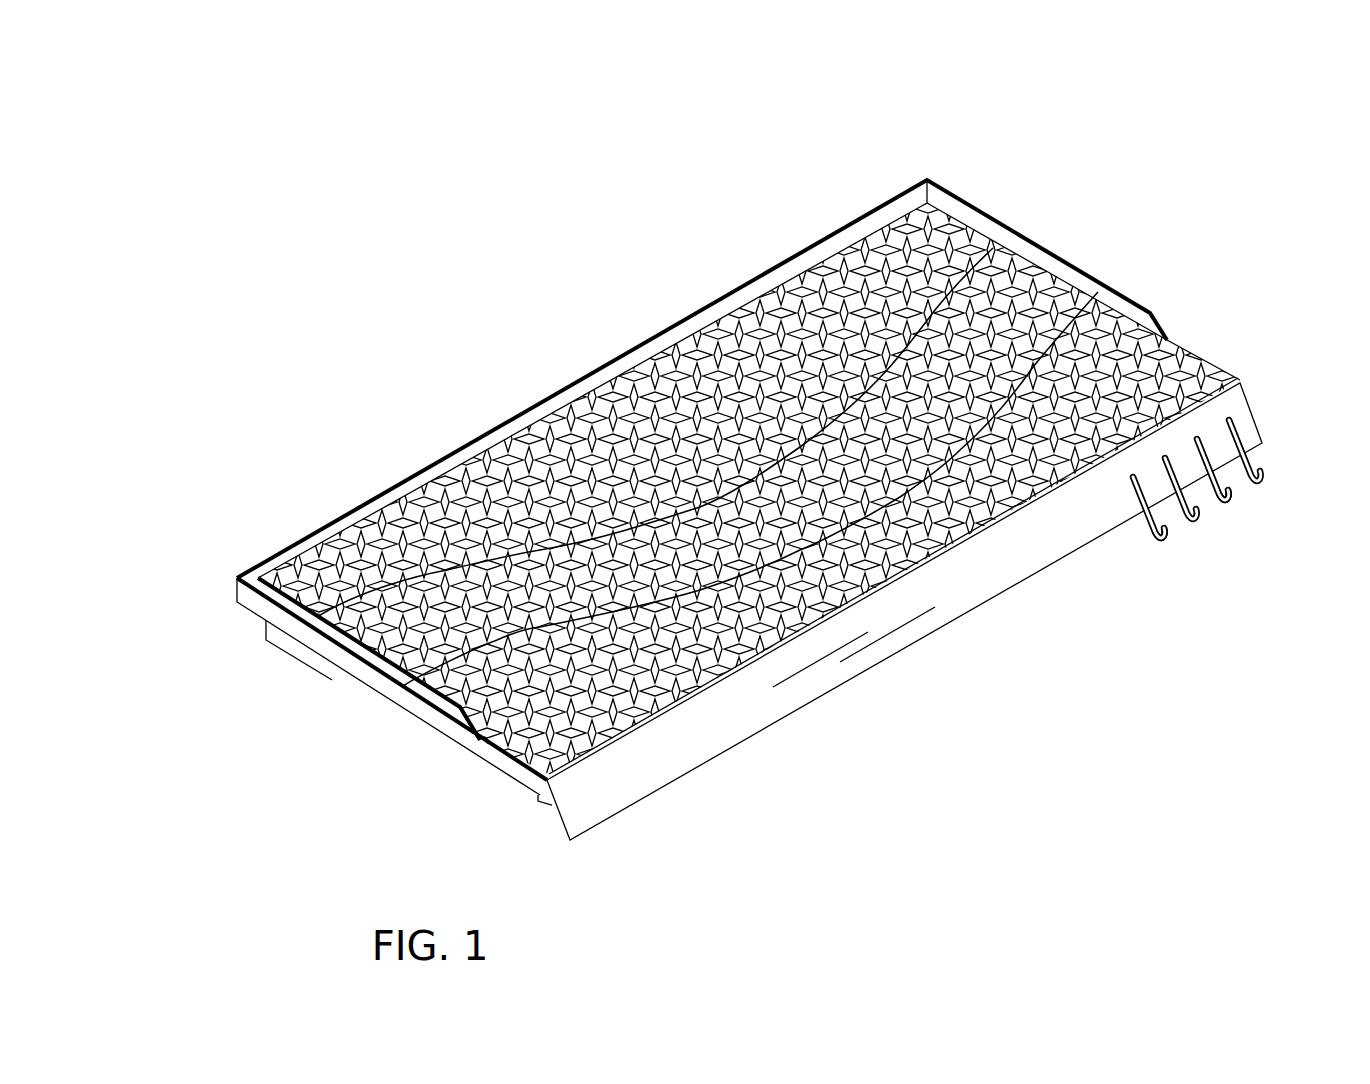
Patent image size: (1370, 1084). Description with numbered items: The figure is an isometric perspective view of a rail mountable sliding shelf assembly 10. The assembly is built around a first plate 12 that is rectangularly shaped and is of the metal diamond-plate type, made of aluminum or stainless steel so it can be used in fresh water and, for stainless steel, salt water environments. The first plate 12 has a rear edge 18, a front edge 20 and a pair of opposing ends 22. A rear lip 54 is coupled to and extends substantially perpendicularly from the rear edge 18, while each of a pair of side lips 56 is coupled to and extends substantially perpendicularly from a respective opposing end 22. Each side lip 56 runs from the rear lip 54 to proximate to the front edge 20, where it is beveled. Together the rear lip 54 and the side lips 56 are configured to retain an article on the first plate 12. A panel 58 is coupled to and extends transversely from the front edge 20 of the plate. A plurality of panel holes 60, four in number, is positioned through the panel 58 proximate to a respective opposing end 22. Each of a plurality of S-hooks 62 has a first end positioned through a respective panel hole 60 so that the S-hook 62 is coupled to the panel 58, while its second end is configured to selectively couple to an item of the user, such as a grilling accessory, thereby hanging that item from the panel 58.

The rail mountable sliding shelf assembly 10 is at (538, 130).
The first plate 12 is at (790, 335).
The rear edge 18 is at (656, 368).
The front edge 20 is at (853, 593).
The opposing ends 22 is at (268, 622).
The rear lip 54 is at (622, 352).
The side lip 56 is at (365, 680).
The panel 58 is at (947, 597).
The panel holes 60 is at (1133, 477).
The S-hooks 62 is at (1228, 498).